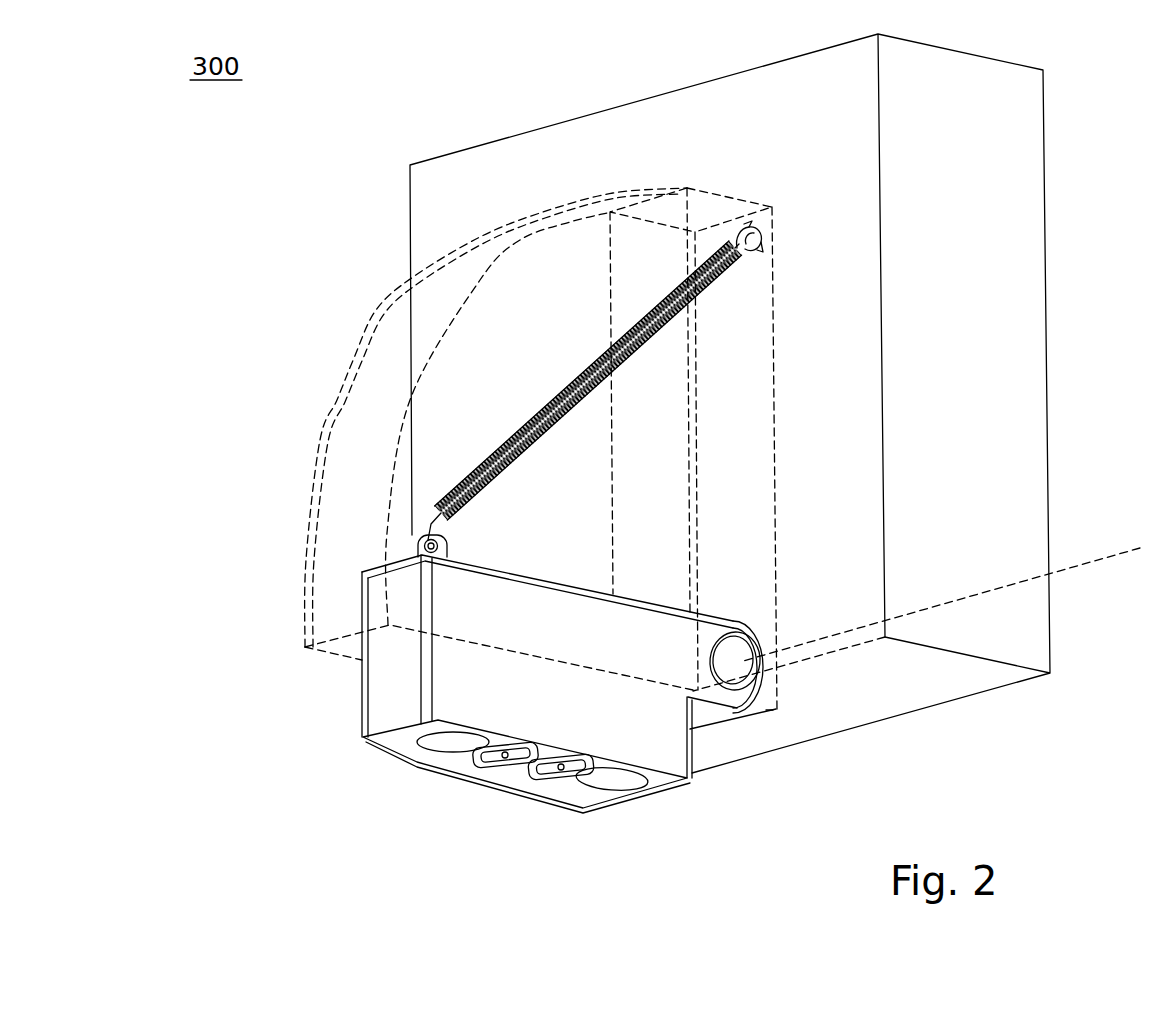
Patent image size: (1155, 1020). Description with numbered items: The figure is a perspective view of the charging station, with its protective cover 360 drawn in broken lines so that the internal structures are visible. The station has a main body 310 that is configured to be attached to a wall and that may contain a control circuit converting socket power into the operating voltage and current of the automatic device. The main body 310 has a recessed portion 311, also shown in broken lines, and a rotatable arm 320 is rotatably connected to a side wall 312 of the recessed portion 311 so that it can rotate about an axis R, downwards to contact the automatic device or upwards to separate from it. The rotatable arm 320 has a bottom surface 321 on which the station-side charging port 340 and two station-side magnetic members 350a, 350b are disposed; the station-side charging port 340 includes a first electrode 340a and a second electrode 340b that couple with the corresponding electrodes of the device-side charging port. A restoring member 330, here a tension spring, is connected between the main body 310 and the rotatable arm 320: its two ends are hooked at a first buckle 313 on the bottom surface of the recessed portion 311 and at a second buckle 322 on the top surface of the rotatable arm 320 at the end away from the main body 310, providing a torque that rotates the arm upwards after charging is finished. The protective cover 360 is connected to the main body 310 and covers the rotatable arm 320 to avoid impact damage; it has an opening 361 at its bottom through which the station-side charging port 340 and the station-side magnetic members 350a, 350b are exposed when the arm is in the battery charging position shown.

The main body 310 is at (1012, 227).
The recessed portion 311 is at (752, 450).
The side wall 312 is at (626, 266).
The first buckle 313 is at (738, 232).
The rotatable arm 320 is at (526, 714).
The bottom surface 321 is at (489, 821).
The second buckle 322 is at (414, 542).
The restoring member 330 is at (563, 393).
The station-side charging port 340 is at (517, 832).
The first electrode 340a is at (498, 757).
The second electrode 340b is at (555, 765).
The station-side magnetic member 350a is at (438, 745).
The station-side magnetic member 350b is at (618, 782).
The protective cover 360 is at (343, 432).
The opening 361 is at (341, 655).
The axis R is at (1140, 546).